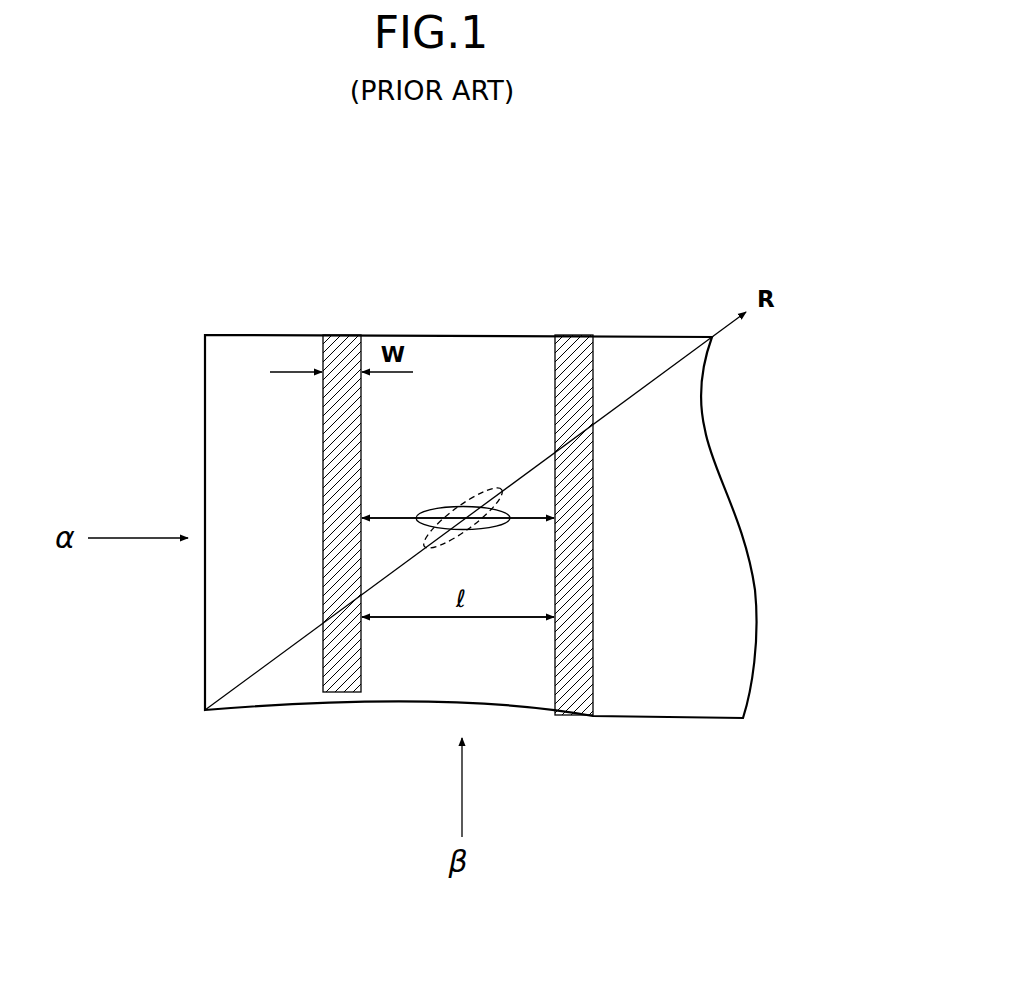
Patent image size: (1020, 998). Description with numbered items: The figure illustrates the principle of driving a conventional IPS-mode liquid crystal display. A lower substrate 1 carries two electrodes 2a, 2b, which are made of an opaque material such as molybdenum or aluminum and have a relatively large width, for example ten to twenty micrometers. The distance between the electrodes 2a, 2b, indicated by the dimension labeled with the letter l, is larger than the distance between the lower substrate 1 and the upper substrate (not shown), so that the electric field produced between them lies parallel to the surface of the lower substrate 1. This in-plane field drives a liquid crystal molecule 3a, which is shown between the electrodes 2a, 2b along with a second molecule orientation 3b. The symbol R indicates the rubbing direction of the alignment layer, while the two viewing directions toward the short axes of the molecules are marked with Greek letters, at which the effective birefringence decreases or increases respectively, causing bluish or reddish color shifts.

The lower substrate 1 is at (738, 609).
The electrode 2a is at (339, 343).
The electrode 2b is at (578, 343).
The liquid crystal molecule 3a is at (479, 491).
The beam spot (elliptical, along track) 3b is at (432, 507).